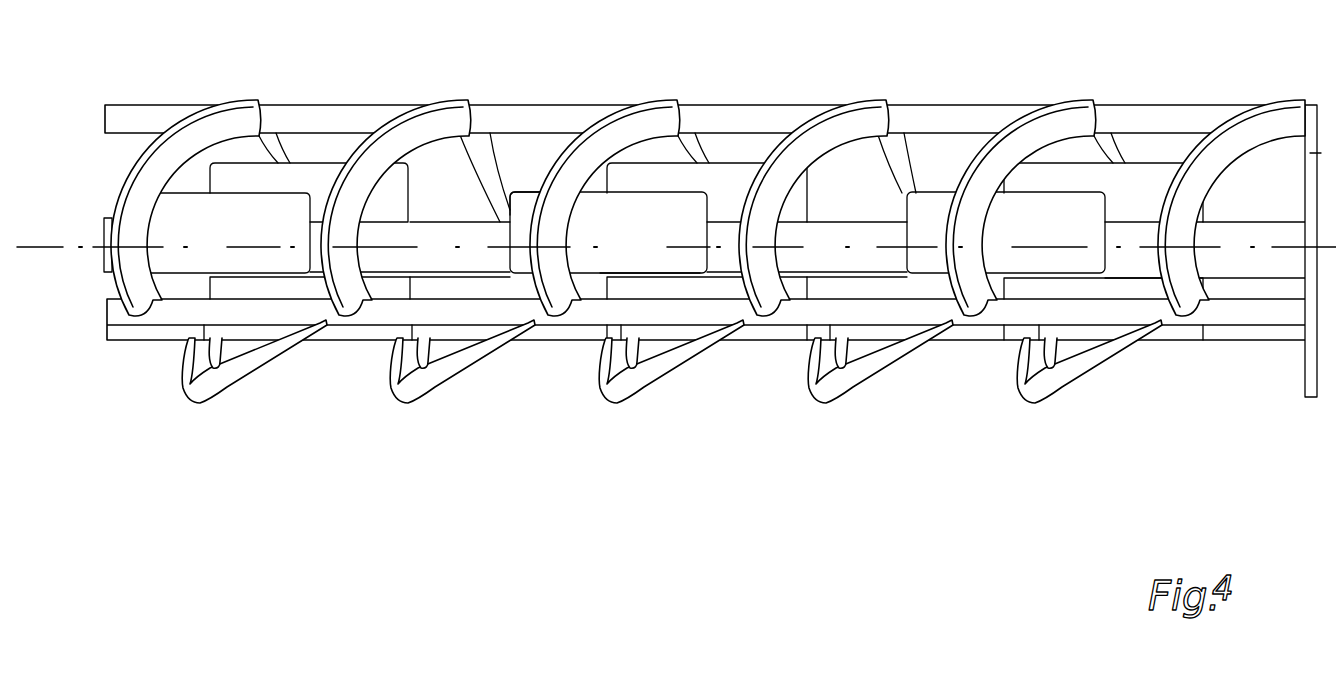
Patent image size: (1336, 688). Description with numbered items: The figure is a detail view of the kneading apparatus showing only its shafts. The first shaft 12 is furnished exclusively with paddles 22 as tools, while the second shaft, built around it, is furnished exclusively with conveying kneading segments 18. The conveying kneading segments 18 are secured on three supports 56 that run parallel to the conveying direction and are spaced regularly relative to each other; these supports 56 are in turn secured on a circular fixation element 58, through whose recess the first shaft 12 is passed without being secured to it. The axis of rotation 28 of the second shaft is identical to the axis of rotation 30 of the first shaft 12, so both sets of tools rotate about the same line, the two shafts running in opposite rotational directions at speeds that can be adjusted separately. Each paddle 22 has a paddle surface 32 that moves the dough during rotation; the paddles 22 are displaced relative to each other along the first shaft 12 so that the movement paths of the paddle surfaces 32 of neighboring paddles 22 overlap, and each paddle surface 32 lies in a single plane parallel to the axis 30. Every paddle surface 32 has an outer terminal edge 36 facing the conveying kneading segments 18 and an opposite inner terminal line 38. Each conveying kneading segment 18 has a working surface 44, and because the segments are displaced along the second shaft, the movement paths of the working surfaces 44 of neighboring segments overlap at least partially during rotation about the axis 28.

The first shaft 12 is at (458, 232).
The conveying kneading segments 18 is at (845, 400).
The paddles 22 is at (677, 198).
The axis of rotation of the second shaft 28 is at (45, 248).
The axis of rotation of the first shaft 30 is at (60, 305).
The paddle surface 32 is at (620, 242).
The outer terminal edge 36 is at (596, 185).
The inner terminal line 38 is at (651, 262).
The working surface 44 is at (822, 370).
The supports 56 is at (962, 112).
The circular fixation element 58 is at (1308, 172).